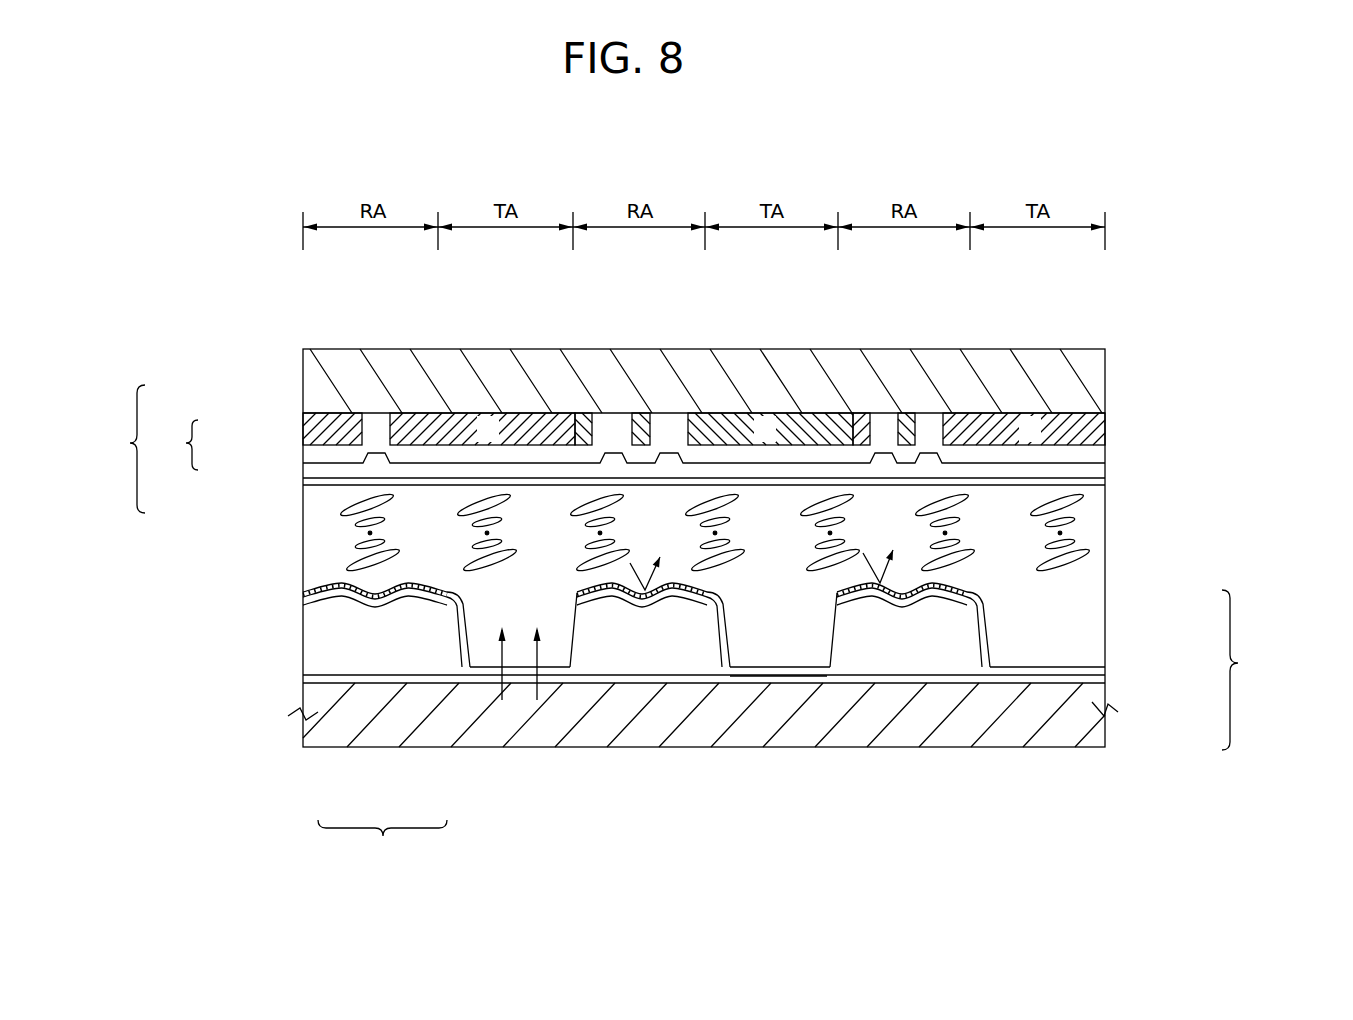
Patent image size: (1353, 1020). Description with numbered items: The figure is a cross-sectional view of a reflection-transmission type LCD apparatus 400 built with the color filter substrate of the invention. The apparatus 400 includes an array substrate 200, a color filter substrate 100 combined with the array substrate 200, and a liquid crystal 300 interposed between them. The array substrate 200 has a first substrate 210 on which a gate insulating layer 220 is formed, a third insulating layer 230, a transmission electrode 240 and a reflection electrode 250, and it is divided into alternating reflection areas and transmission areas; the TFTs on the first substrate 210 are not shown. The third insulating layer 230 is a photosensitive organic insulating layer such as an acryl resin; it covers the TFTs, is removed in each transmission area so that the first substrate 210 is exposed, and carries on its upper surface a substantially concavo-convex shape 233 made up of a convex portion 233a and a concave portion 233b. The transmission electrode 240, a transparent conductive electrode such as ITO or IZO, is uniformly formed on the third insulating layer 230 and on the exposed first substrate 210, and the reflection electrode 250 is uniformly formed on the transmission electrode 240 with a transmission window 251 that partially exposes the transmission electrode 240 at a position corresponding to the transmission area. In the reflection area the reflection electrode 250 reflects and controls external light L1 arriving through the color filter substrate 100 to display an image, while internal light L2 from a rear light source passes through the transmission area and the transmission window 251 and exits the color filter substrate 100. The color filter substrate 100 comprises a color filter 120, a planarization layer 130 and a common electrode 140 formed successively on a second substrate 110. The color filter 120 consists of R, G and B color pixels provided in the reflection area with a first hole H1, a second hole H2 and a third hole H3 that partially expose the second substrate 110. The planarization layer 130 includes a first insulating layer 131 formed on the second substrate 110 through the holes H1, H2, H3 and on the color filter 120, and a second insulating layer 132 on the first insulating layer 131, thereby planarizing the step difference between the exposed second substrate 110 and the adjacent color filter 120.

The reflection-transmission type LCD apparatus 400 is at (858, 144).
The color filter substrate 100 is at (654, 431).
The second substrate 110 is at (1098, 380).
The color filter 120 is at (303, 421).
The planarization layer 130 is at (626, 444).
The first insulating layer 131 is at (303, 447).
The second insulating layer 132 is at (303, 466).
The common electrode 140 is at (303, 481).
The liquid crystal 300 is at (1070, 525).
The array substrate 200 is at (787, 683).
The first substrate 210 is at (1105, 700).
The gate insulating layer 220 is at (1105, 679).
The third insulating layer 230 is at (963, 642).
The concavo-convex shape 233 is at (635, 721).
The convex portion 233a is at (346, 607).
The concave portion 233b is at (384, 610).
The transmission electrode 240 is at (773, 668).
The reflection electrode 250 is at (413, 583).
The transmission window 251 is at (777, 647).
The first hole H1 is at (937, 420).
The second hole H2 is at (671, 420).
The third hole H3 is at (380, 420).
The external light L1 is at (663, 603).
The internal light L2 is at (537, 657).